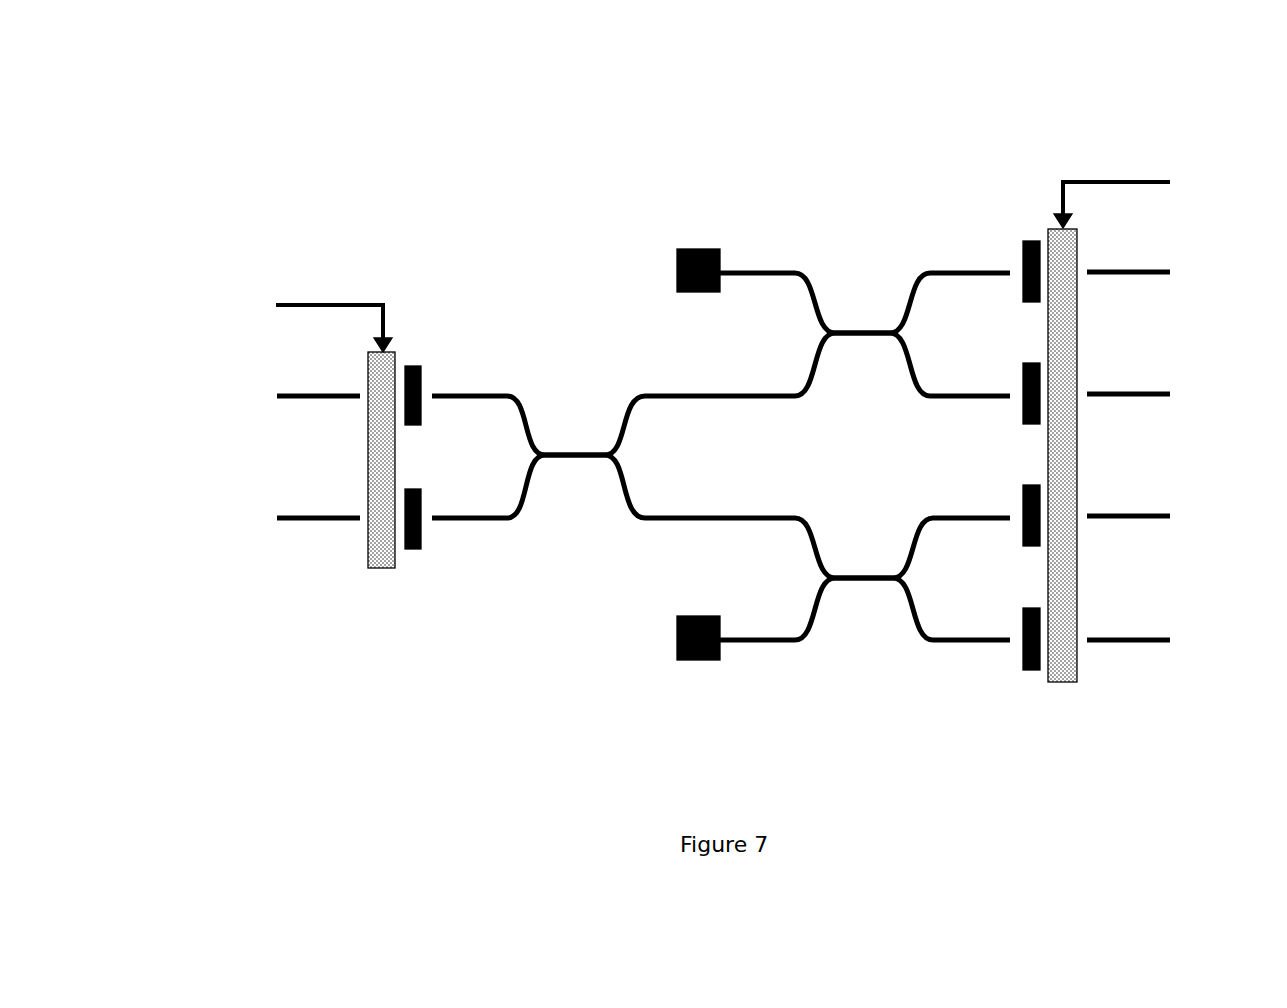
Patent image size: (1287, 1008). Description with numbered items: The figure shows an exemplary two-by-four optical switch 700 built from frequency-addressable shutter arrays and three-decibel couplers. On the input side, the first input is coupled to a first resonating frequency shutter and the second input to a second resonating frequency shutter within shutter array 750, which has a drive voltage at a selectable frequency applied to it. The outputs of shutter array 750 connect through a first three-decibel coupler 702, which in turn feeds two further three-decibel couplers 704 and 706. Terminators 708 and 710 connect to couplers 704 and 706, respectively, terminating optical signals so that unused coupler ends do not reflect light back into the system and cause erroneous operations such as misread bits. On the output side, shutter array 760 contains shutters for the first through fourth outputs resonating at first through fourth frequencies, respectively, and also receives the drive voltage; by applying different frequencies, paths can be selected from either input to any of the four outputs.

The 2×4 optical switch 700 is at (383, 85).
The 3 dB coupler 702 is at (577, 425).
The 3 dB coupler 704 is at (871, 298).
The 3 dB coupler 706 is at (871, 552).
The terminator 708 is at (677, 267).
The terminator 710 is at (677, 636).
The shutter array 750 is at (432, 588).
The shutter array 760 is at (1090, 707).